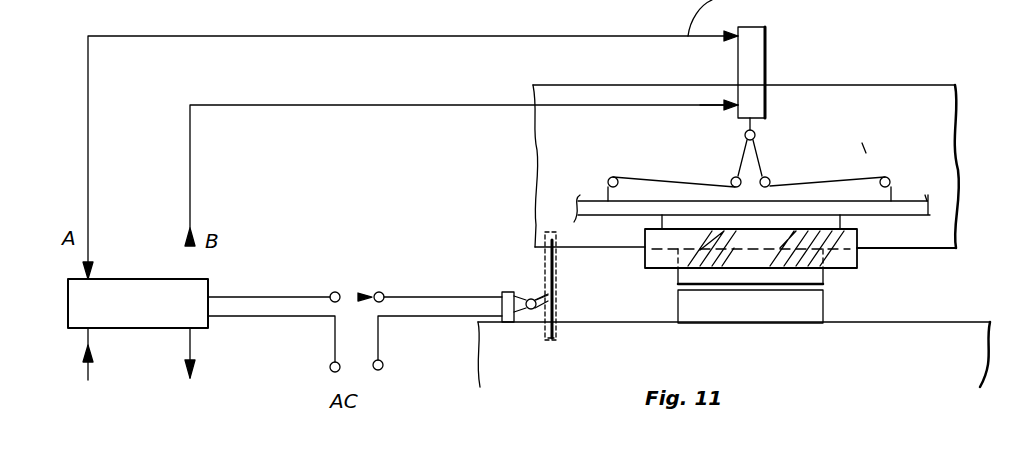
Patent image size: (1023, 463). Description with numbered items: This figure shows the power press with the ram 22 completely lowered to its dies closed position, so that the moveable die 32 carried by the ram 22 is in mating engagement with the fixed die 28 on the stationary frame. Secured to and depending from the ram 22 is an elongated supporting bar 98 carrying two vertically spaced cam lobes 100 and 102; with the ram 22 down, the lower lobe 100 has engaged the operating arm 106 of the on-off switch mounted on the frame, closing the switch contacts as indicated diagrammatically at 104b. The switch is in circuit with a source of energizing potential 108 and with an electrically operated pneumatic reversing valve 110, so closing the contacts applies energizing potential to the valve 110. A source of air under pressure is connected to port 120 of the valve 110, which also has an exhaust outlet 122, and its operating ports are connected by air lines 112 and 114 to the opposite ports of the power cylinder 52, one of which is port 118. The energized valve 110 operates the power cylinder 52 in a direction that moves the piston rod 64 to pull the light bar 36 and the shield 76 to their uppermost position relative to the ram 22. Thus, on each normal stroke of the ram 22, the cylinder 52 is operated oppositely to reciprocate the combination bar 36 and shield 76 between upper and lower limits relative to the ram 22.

The ram 22 is at (535, 165).
The fixed die 28 is at (825, 312).
The moveable die 32 is at (823, 275).
The light bar 36 is at (832, 205).
The power cylinder 52 is at (778, 55).
The piston rod 64 is at (768, 130).
The shield 76 is at (860, 256).
The supporting bar 98 is at (558, 268).
The cam lobe 100 is at (543, 297).
The cam lobe 102 is at (538, 335).
The closed switch contacts 104b is at (352, 278).
The operating arm 106 is at (545, 312).
The source of energizing potential 108 is at (360, 363).
The reversing valve 110 is at (105, 280).
The air line 112 is at (200, 36).
The air line 114 is at (245, 105).
The port 118 is at (735, 105).
The port 120 is at (90, 355).
The exhaust outlet 122 is at (192, 348).